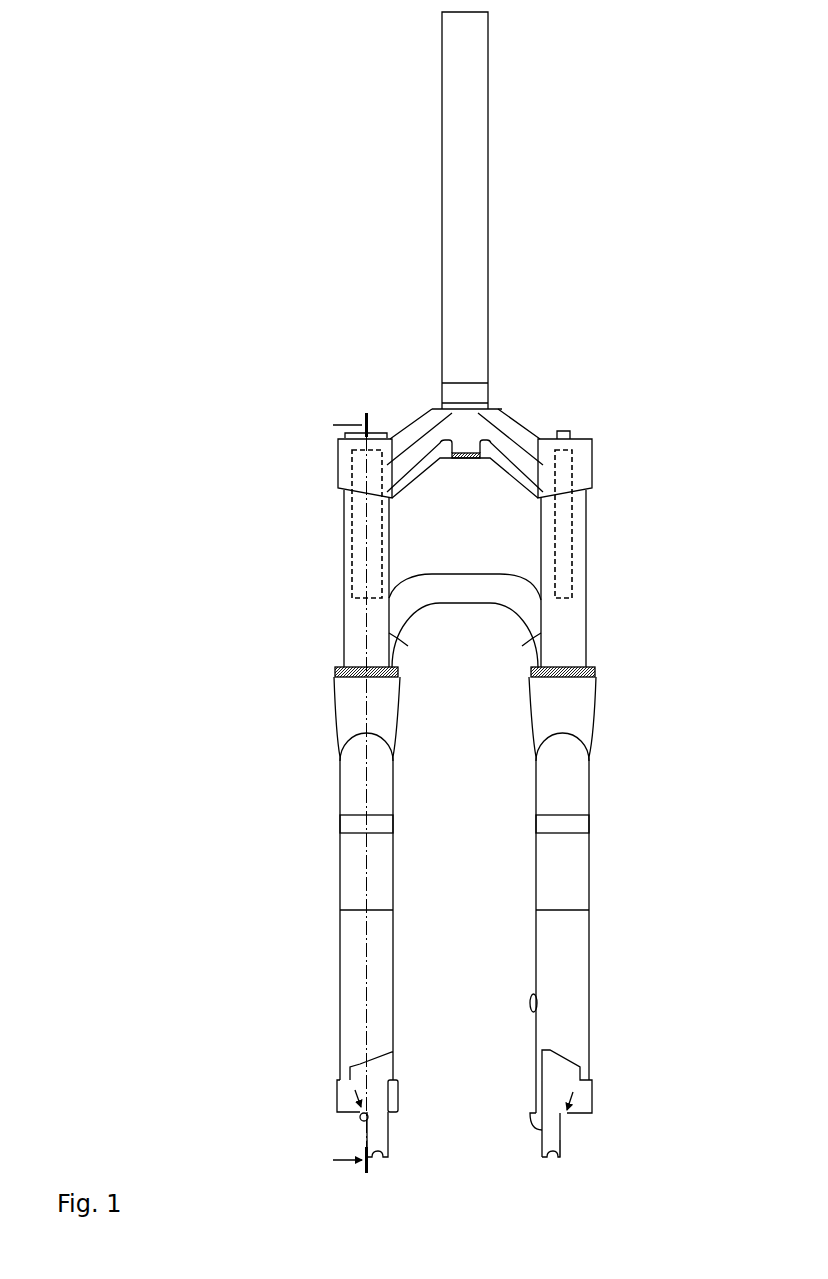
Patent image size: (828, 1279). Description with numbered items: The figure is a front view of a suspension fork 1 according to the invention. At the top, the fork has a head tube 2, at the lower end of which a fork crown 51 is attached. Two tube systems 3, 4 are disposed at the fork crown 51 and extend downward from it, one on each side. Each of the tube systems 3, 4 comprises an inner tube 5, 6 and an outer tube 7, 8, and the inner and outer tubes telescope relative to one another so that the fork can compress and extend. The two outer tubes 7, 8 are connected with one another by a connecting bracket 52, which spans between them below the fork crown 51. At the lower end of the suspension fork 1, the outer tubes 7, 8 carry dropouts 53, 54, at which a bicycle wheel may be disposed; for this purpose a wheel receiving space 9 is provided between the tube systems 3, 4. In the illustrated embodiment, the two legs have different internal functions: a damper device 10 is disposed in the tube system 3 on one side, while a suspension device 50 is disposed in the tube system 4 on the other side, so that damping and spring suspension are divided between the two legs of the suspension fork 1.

The suspension fork 1 is at (338, 180).
The head tube 2 is at (478, 53).
The tube system 3 is at (322, 532).
The tube system 4 is at (597, 535).
The inner tube 5 is at (343, 635).
The inner tube 6 is at (585, 627).
The outer tube 7 is at (340, 905).
The outer tube 8 is at (585, 895).
The wheel receiving space 9 is at (463, 1097).
The damper device 10 is at (355, 470).
The suspension device 50 is at (562, 473).
The fork crown 51 is at (520, 433).
The connecting bracket 52 is at (452, 628).
The dropout 53 is at (317, 1133).
The dropout 54 is at (583, 1142).